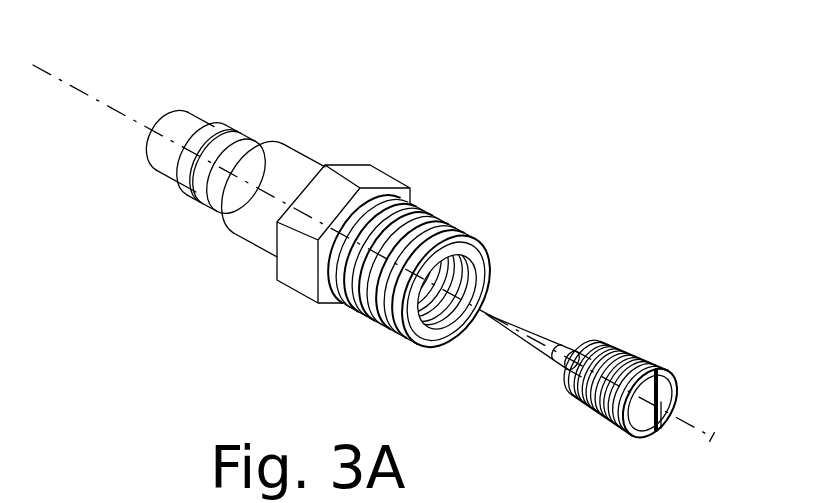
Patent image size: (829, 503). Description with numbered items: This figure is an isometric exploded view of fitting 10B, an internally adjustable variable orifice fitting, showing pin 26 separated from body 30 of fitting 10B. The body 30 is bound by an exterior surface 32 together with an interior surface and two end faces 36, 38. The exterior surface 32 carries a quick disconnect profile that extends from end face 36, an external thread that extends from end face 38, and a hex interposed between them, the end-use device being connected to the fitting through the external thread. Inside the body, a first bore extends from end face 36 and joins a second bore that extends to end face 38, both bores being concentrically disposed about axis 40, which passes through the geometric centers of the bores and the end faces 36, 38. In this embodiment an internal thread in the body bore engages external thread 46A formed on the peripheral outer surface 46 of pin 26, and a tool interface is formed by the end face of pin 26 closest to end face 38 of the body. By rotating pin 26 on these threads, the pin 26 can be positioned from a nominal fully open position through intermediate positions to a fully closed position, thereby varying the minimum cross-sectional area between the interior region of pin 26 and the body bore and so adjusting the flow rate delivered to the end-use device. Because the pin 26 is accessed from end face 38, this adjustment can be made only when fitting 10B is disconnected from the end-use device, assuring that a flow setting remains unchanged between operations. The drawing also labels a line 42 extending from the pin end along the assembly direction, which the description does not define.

The fitting 10B is at (607, 146).
The pin 26 is at (658, 307).
The body 30 is at (447, 112).
The exterior surface 32 is at (296, 151).
The end face 36 is at (146, 143).
The end face 38 is at (448, 338).
The axis 40 is at (77, 89).
The longitudinal axis of probe 42 is at (712, 436).
The peripheral outer surface 46 is at (650, 357).
The external thread 46A is at (626, 393).